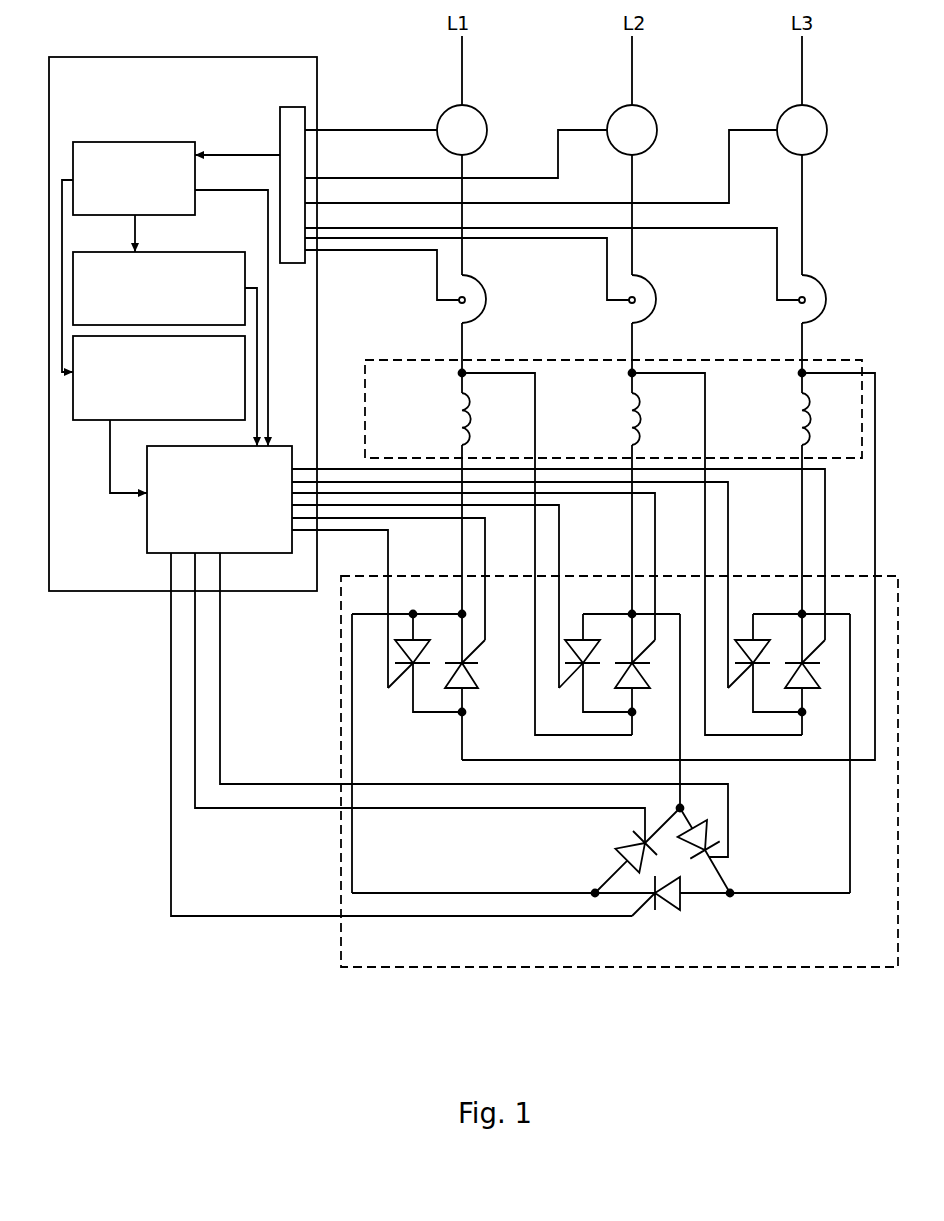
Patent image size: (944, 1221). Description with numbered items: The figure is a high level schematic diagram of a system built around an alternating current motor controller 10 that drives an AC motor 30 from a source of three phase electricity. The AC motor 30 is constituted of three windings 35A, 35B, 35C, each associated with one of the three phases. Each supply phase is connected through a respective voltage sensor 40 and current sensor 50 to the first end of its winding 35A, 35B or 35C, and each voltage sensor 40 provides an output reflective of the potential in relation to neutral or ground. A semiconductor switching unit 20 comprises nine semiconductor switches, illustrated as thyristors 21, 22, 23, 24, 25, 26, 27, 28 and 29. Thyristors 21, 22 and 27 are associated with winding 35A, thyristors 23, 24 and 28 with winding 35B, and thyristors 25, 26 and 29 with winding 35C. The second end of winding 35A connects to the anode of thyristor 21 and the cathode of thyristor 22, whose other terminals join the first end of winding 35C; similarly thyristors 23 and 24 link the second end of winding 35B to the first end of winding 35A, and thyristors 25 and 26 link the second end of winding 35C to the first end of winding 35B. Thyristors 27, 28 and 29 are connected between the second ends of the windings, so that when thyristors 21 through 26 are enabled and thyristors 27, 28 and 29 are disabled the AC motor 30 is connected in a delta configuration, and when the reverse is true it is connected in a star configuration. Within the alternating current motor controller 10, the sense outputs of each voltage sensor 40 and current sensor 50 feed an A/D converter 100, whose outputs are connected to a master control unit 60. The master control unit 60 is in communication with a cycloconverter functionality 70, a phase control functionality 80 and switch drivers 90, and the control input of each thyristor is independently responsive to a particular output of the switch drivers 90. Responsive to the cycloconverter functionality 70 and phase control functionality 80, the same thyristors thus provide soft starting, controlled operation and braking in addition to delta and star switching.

The alternating current motor controller 10 is at (122, 592).
The semiconductor switching unit 20 is at (340, 670).
The thyristor 21 is at (422, 650).
The thyristor 22 is at (478, 683).
The thyristor 23 is at (592, 650).
The thyristor 24 is at (648, 683).
The thyristor 25 is at (762, 650).
The thyristor 26 is at (818, 683).
The thyristor 27 is at (618, 850).
The thyristor 28 is at (708, 824).
The thyristor 29 is at (680, 905).
The AC motor 30 is at (390, 360).
The winding 35A is at (460, 422).
The winding 35B is at (630, 422).
The winding 35C is at (797, 423).
The voltage sensor 40 is at (445, 110).
The current sensor 50 is at (463, 312).
The master control unit 60 is at (133, 142).
The cycloconverter functionality 70 is at (193, 252).
The phase control functionality 80 is at (100, 422).
The switch drivers 90 is at (147, 518).
The A/D converter 100 is at (291, 107).